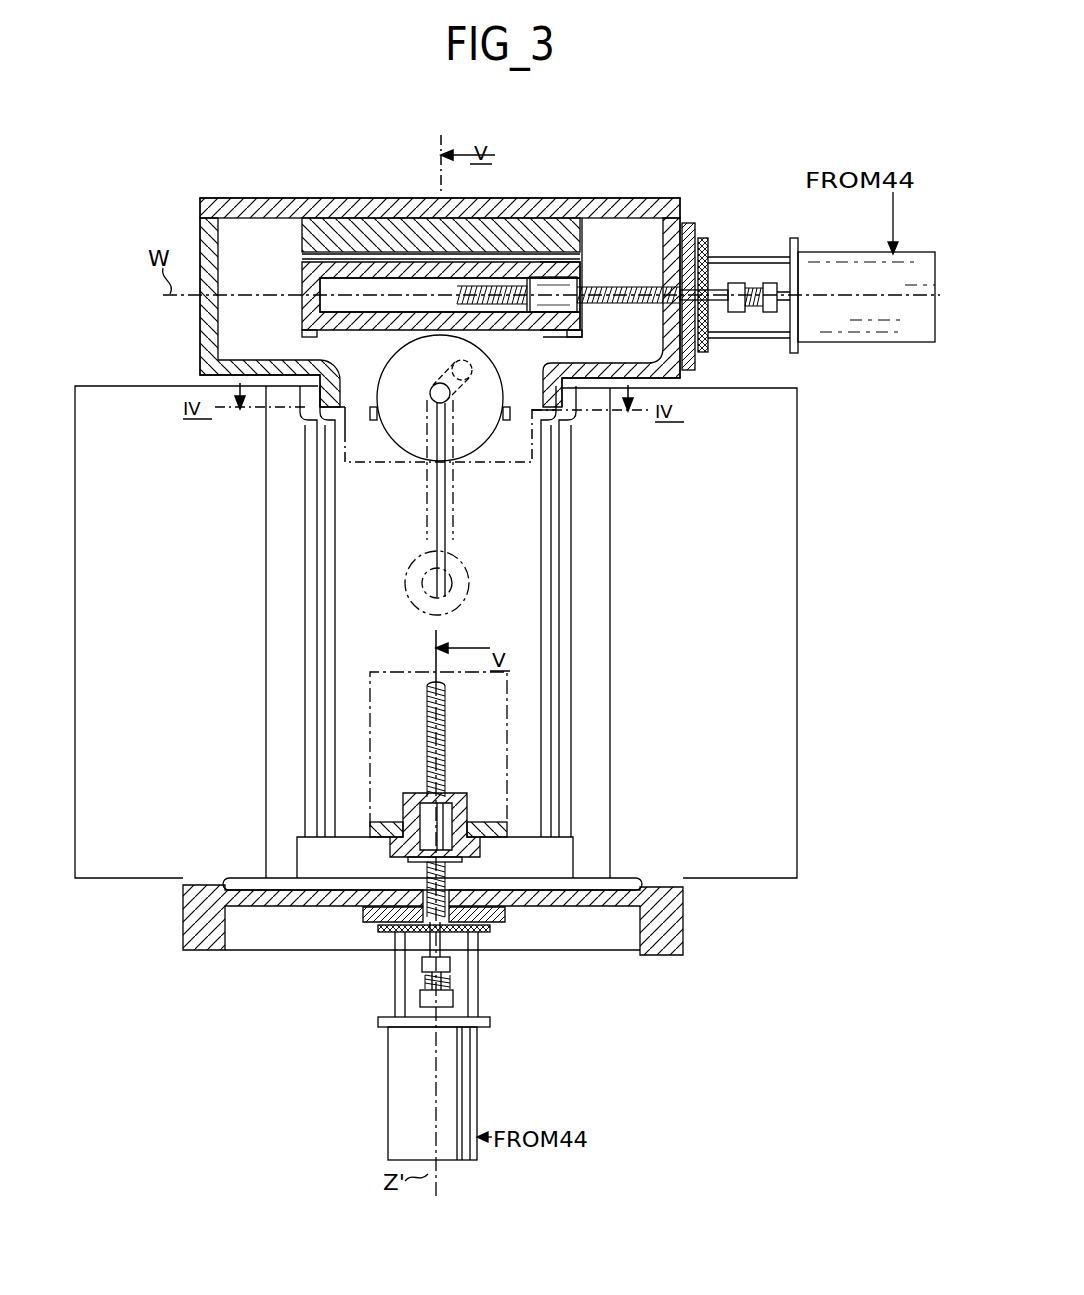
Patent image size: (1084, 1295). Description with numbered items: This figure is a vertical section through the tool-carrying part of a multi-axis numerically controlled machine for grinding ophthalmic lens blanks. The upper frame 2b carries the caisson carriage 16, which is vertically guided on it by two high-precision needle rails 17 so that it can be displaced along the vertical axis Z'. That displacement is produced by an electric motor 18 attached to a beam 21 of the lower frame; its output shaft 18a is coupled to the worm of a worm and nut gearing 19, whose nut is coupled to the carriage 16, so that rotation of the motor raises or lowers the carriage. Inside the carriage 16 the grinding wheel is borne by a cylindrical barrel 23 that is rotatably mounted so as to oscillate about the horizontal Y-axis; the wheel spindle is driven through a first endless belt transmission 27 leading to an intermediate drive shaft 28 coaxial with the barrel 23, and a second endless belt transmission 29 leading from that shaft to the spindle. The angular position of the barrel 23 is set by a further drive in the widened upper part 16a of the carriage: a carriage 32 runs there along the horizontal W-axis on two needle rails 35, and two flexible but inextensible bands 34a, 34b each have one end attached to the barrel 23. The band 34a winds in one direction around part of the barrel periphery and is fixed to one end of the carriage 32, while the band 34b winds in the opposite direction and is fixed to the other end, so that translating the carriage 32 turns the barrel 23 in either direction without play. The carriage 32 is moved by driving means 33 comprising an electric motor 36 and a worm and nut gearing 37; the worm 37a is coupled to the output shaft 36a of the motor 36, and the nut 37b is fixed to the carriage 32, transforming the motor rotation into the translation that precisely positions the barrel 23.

The upper frame 2b is at (798, 729).
The caisson carriage 16 is at (530, 538).
The widened upper part of the carriage 16a is at (618, 203).
The needle rails 17 is at (308, 703).
The electric motor 18 is at (388, 1077).
The output shaft 18a is at (442, 1008).
The worm and nut gearing 19 is at (455, 792).
The beam 21 is at (684, 925).
The cylindrical barrel 23 is at (397, 445).
The first endless belt transmission 27 is at (456, 510).
The intermediate drive shaft 28 is at (430, 393).
The second endless belt transmission 29 is at (452, 369).
The carriage 32 is at (300, 314).
The driving means 33 is at (750, 220).
The band 34a is at (372, 334).
The band 34b is at (506, 331).
The needle rails 35 is at (588, 257).
The electric motor 36 is at (851, 345).
The output shaft 36a is at (783, 310).
The worm and nut gearing 37 is at (597, 288).
The worm 37a is at (645, 305).
The nut 37b is at (551, 277).